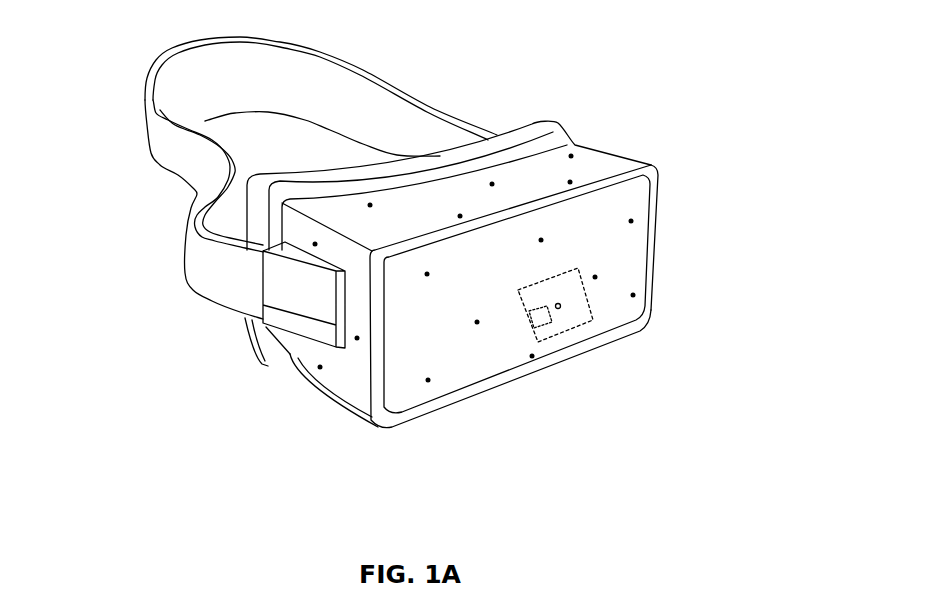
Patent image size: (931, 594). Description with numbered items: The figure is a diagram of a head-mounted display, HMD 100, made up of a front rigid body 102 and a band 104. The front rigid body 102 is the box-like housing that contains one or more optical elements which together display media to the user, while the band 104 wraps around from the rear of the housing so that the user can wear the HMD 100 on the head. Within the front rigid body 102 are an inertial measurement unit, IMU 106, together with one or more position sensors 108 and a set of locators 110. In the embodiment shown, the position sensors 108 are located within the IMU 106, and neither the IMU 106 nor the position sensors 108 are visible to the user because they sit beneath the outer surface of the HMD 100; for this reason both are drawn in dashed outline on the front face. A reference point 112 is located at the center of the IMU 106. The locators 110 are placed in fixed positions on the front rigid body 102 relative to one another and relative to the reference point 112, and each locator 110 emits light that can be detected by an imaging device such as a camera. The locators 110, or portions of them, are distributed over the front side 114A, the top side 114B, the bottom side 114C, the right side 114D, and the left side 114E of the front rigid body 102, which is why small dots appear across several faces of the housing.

The head-mounted display 100 is at (440, 274).
The front rigid body 102 is at (660, 165).
The band 104 is at (410, 93).
The inertial measurement unit 106 is at (606, 323).
The position sensors 108 is at (530, 332).
The locators 110 is at (647, 288).
The reference point 112 is at (562, 324).
The front side 114A is at (416, 405).
The top side 114B is at (340, 205).
The bottom side 114C is at (314, 405).
The right side 114D is at (349, 375).
The left side 114E is at (638, 147).